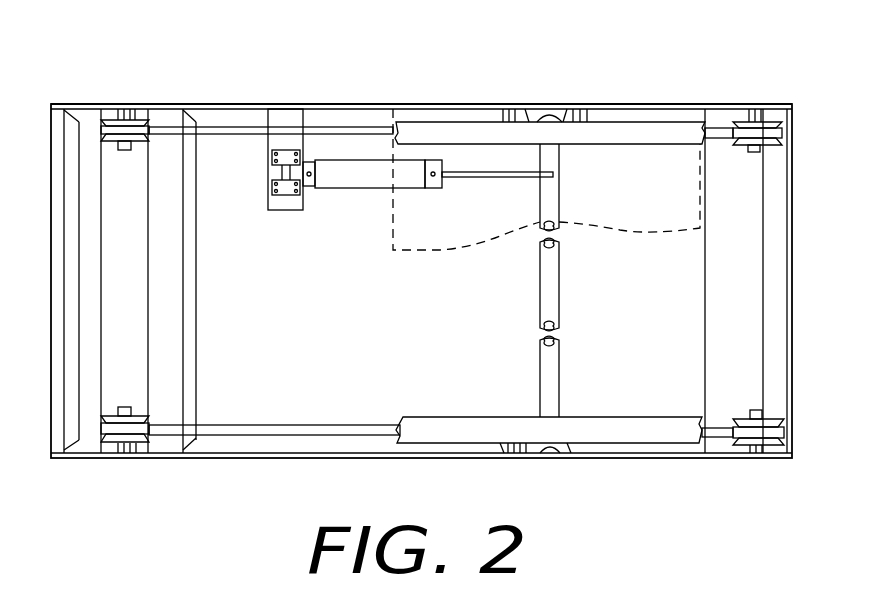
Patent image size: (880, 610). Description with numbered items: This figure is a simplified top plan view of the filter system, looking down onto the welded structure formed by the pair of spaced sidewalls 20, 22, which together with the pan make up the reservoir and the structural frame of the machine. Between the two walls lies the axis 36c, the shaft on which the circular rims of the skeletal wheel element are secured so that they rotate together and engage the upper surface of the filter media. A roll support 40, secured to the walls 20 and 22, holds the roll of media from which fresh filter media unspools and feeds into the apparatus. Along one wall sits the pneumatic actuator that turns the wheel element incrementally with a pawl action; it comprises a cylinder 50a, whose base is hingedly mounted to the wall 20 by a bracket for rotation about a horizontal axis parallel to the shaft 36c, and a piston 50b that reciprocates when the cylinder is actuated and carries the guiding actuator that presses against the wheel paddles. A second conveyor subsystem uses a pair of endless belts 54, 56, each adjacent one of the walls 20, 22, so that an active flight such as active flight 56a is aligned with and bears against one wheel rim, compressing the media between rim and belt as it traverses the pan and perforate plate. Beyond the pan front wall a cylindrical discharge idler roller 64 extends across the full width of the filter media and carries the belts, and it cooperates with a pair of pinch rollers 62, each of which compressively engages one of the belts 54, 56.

The sidewall 20 is at (197, 103).
The sidewall 22 is at (655, 460).
The axis 36c is at (582, 280).
The roll support 40 is at (628, 215).
The cylinder 50a is at (370, 178).
The piston 50b is at (507, 176).
The belt 54 is at (723, 132).
The belt 56 is at (260, 430).
The active flight 56a is at (348, 442).
The pinch roller 62 is at (114, 123).
The discharge idler roller 64 is at (134, 285).